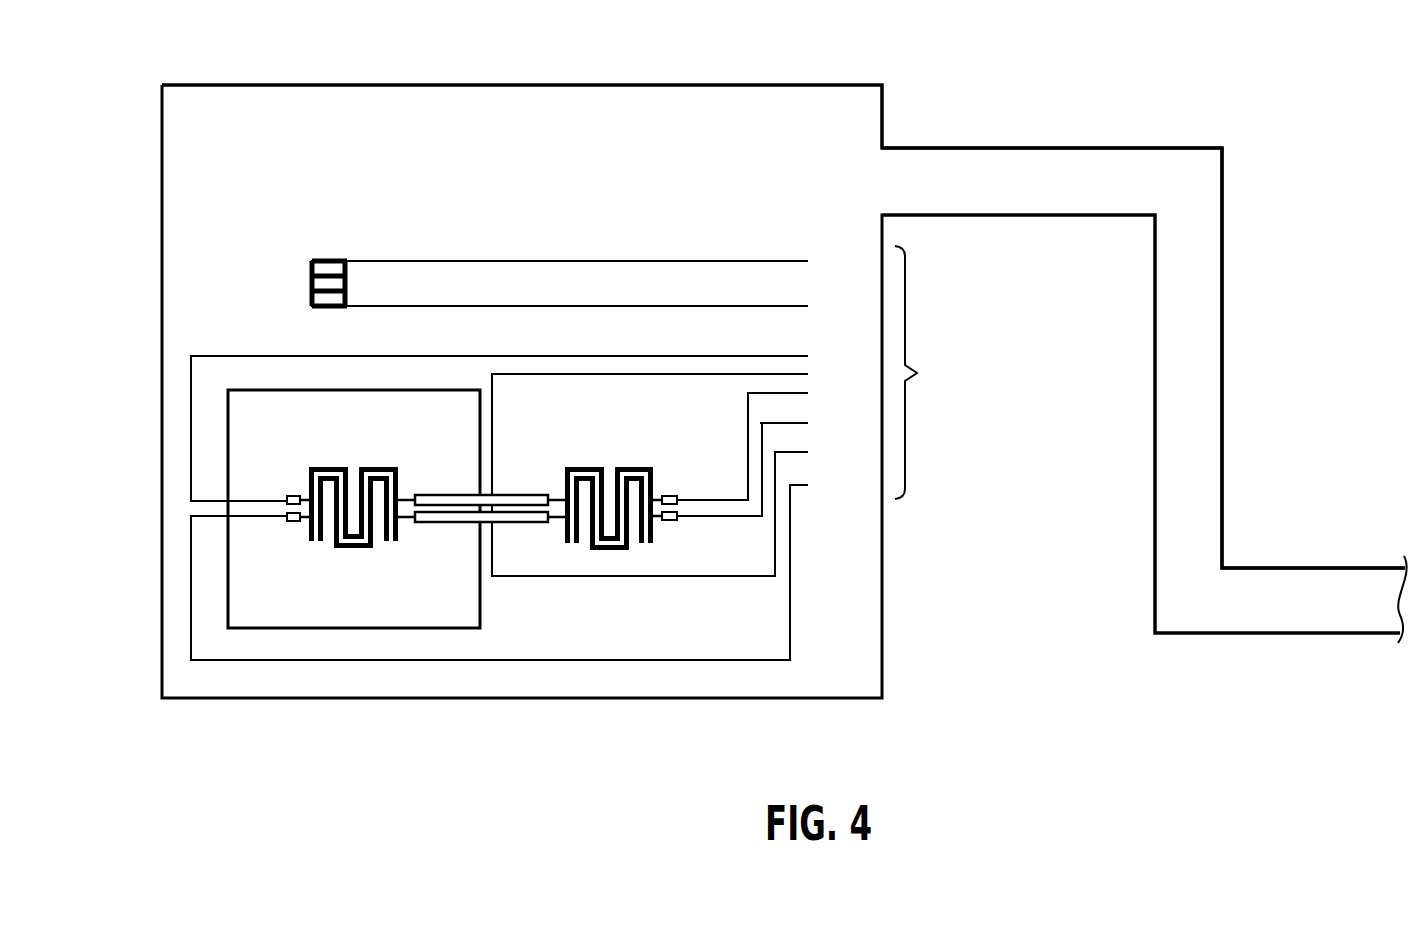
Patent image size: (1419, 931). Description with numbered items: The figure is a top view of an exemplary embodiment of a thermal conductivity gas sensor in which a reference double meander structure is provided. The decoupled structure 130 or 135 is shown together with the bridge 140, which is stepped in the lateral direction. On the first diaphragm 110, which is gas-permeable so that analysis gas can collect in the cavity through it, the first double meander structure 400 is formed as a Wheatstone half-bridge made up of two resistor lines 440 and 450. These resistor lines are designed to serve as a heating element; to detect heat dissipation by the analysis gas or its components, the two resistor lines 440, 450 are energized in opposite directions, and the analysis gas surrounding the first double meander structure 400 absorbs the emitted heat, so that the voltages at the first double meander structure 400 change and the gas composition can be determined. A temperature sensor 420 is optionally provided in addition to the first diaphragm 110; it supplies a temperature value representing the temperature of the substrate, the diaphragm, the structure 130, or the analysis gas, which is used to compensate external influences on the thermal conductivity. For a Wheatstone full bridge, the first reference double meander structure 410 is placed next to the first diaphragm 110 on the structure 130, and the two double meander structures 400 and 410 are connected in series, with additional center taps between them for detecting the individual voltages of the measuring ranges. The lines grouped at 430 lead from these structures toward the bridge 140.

The first diaphragm 110 is at (290, 629).
The decoupled structure 130 is at (362, 93).
The decoupled structure 135 is at (783, 326).
The bridge 140 is at (1035, 162).
The first double meander structure 400 is at (349, 467).
The first reference double meander structure 410 is at (617, 467).
The temperature sensor 420 is at (325, 263).
The contact lines 430 is at (862, 372).
The resistor line 440 is at (216, 356).
The resistor line 450 is at (469, 661).